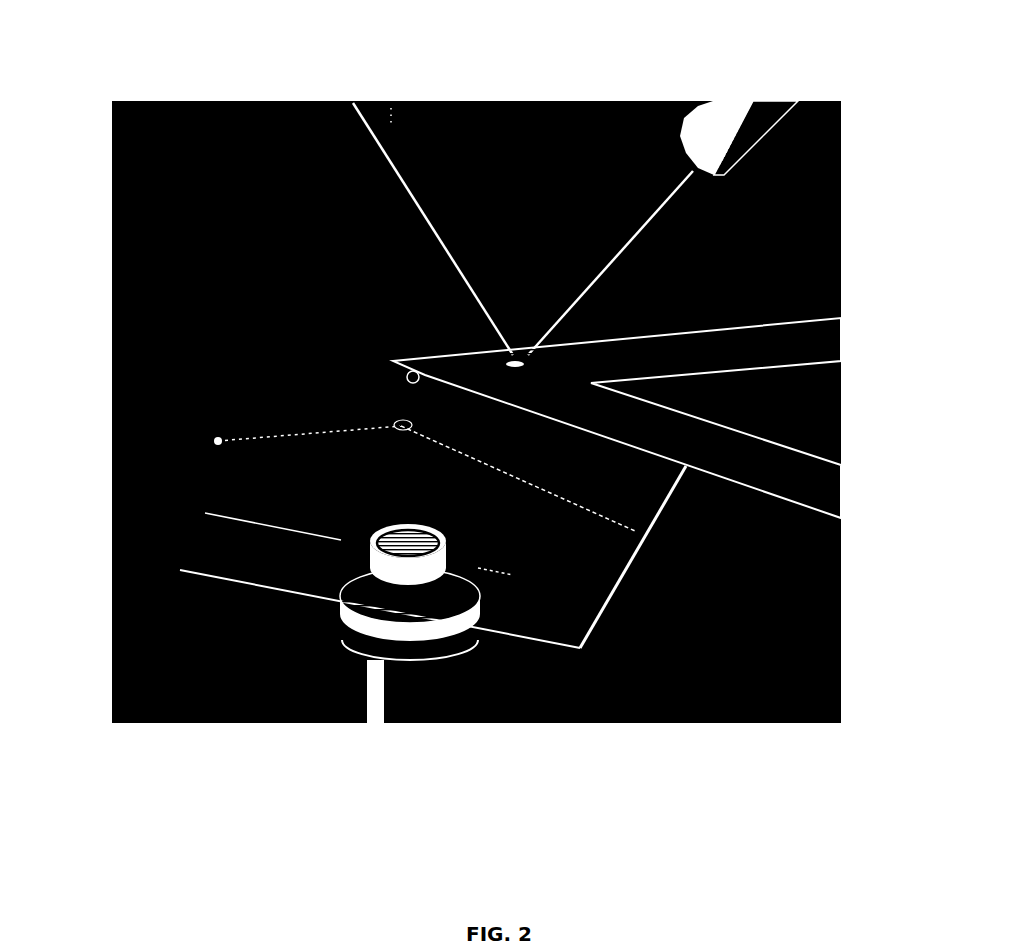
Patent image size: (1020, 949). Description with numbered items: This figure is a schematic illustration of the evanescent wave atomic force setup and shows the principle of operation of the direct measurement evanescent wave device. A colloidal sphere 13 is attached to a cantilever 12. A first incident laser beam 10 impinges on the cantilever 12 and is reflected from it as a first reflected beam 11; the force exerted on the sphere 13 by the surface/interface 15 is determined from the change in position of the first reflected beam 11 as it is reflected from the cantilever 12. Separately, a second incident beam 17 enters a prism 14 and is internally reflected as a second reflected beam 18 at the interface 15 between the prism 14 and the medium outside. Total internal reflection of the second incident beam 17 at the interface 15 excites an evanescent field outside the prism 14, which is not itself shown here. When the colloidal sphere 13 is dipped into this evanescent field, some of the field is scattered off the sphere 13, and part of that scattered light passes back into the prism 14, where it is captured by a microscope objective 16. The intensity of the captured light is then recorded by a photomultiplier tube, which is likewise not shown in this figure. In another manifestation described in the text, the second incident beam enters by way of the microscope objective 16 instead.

The first incident laser beam 10 is at (702, 108).
The first reflected beam 11 is at (383, 95).
The cantilever 12 is at (808, 476).
The colloidal sphere 13 is at (105, 343).
The prism 14 is at (578, 715).
The surface/interface 15 is at (104, 582).
The microscope objective 16 is at (380, 682).
The second incident beam 17 is at (104, 468).
The second reflected beam 18 is at (833, 583).